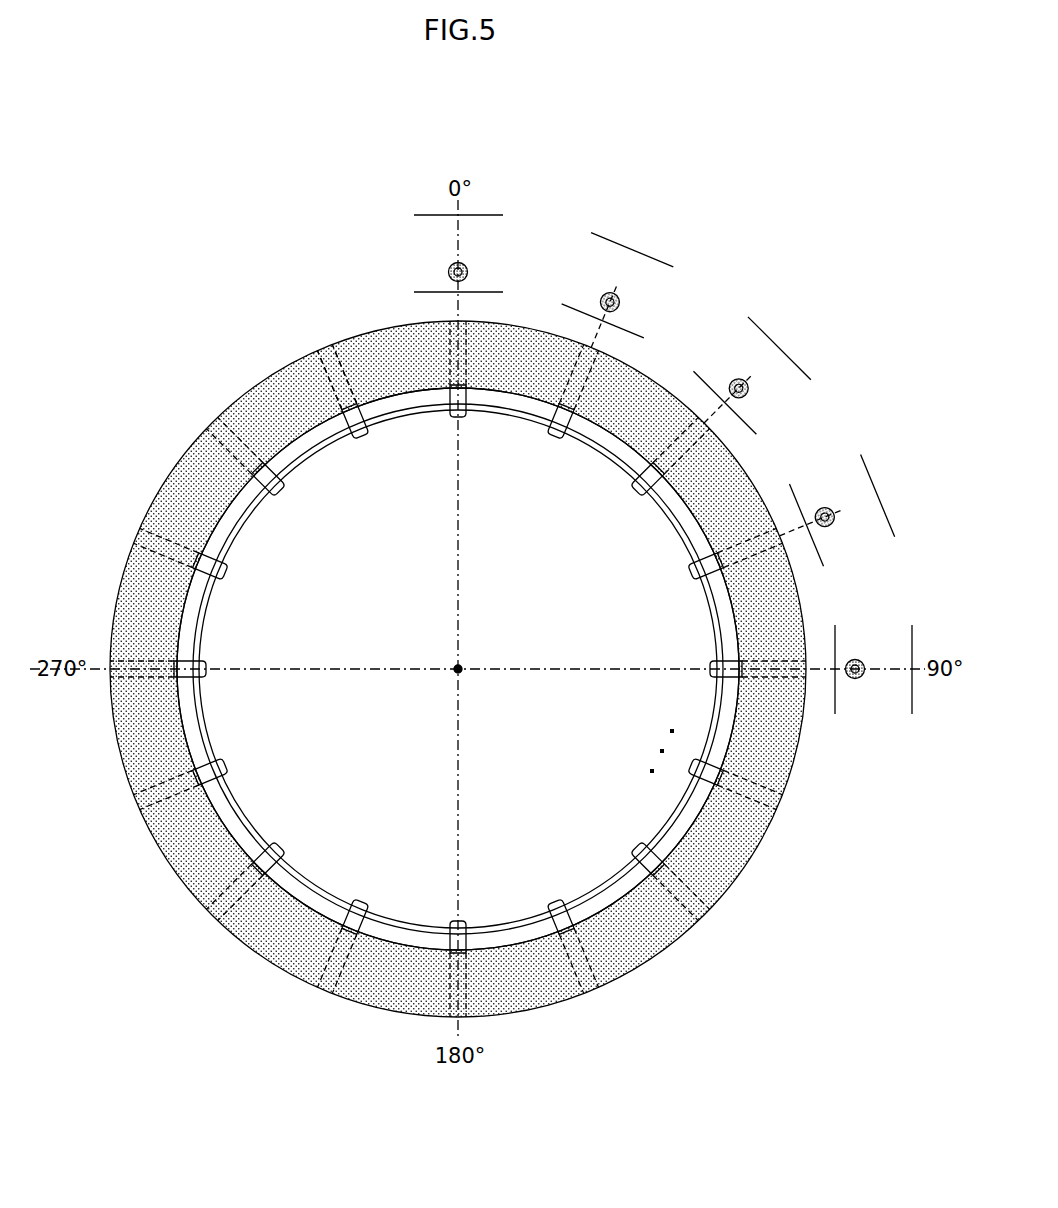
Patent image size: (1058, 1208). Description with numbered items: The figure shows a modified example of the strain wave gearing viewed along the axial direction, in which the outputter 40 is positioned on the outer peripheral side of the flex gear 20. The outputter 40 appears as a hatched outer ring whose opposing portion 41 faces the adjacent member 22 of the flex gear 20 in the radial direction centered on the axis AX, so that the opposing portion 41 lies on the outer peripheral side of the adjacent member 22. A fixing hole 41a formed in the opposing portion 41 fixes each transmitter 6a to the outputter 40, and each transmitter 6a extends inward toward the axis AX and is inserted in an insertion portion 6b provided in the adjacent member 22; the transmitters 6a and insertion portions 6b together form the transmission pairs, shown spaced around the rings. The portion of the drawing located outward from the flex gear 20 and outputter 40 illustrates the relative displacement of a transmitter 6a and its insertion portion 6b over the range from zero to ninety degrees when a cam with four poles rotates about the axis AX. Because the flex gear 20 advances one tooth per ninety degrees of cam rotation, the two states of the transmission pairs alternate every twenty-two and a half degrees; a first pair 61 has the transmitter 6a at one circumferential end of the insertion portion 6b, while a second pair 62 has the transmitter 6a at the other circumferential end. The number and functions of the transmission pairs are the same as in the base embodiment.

The transmitter 6a is at (466, 268).
The insertion portion 6b is at (454, 265).
The flex gear 20 is at (335, 442).
The adjacent member 22 is at (446, 272).
The outputter 40 is at (235, 398).
The opposing portion 41 is at (293, 440).
The fixing hole 41a is at (326, 357).
The first pair 61 is at (668, 286).
The second pair 62 is at (840, 460).
The axis AX is at (455, 672).